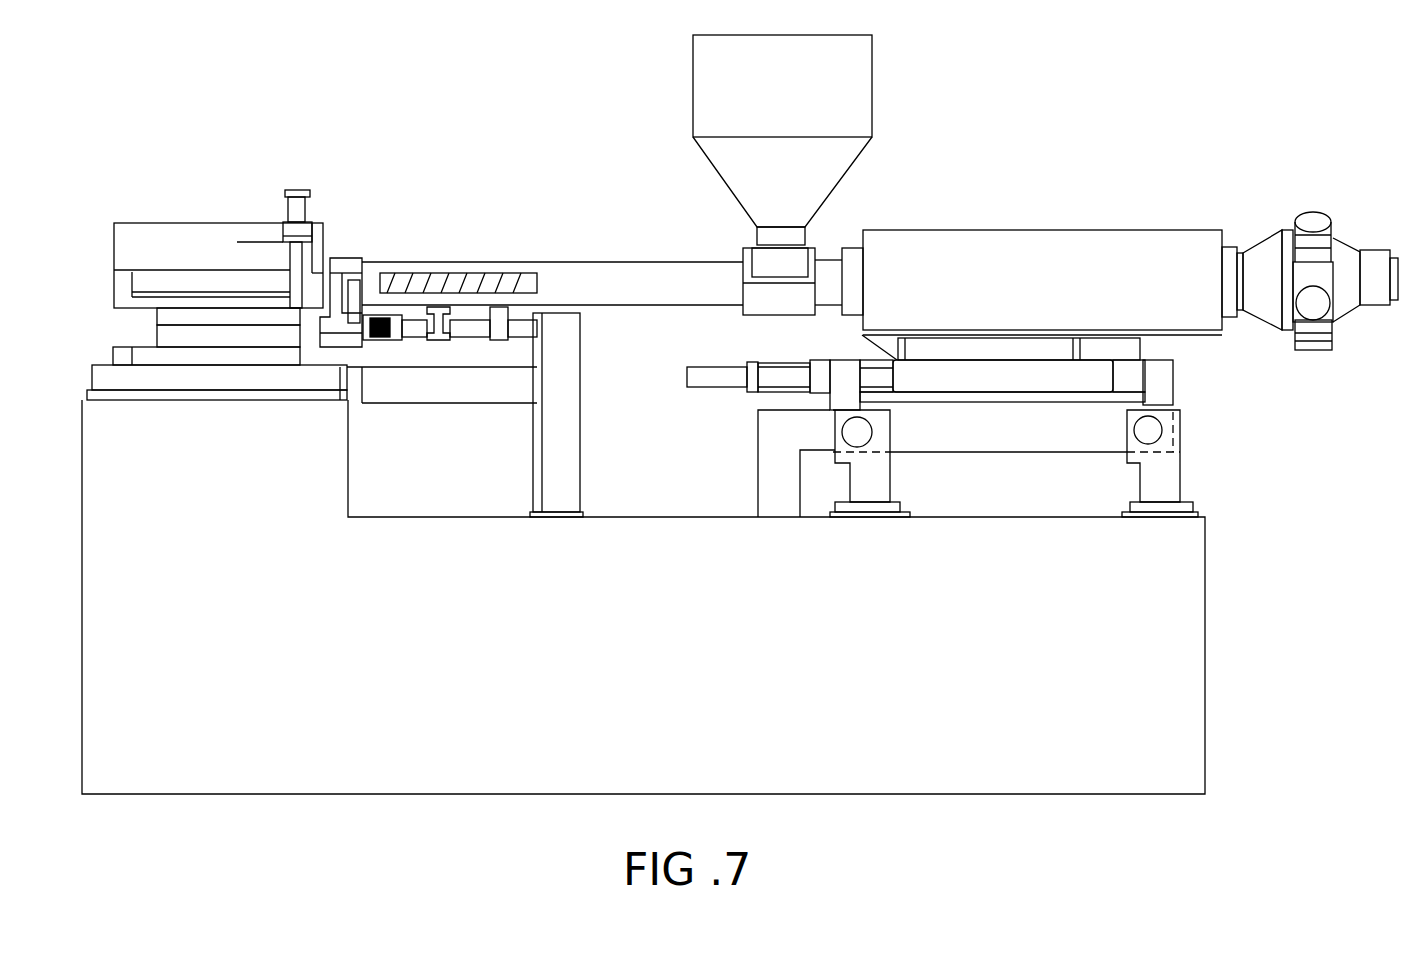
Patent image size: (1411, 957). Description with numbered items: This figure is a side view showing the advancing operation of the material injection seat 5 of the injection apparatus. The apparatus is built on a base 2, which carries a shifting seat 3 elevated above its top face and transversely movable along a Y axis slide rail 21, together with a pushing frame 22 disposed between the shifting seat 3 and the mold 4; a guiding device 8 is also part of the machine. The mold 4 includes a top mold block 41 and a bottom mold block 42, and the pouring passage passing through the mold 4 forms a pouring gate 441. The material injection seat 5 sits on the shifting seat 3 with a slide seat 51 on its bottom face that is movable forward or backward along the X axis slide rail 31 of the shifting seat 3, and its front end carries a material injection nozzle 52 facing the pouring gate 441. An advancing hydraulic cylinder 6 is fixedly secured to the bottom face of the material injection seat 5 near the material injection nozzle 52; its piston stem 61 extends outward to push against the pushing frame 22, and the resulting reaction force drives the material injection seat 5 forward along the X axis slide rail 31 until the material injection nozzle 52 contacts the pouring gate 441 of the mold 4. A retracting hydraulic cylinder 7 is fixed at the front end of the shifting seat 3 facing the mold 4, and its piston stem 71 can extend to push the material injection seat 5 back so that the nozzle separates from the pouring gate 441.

The base 2 is at (1175, 580).
The Y axis slide rail 21 is at (1150, 430).
The pushing frame 22 is at (562, 445).
The shifting seat 3 is at (1160, 388).
The X axis slide rail 31 is at (1123, 368).
The mold 4 is at (106, 283).
The top mold block 41 is at (157, 315).
The bottom mold block 42 is at (200, 340).
The pouring gate 441 is at (302, 347).
The material injection seat 5 is at (915, 250).
The slide seat 51 is at (968, 380).
The material injection nozzle 52 is at (302, 333).
The advancing hydraulic cylinder 6 is at (488, 336).
The piston stem 61 is at (525, 325).
The retracting hydraulic cylinder 7 is at (772, 378).
The piston stem 71 is at (873, 363).
The guiding device 8 is at (775, 500).